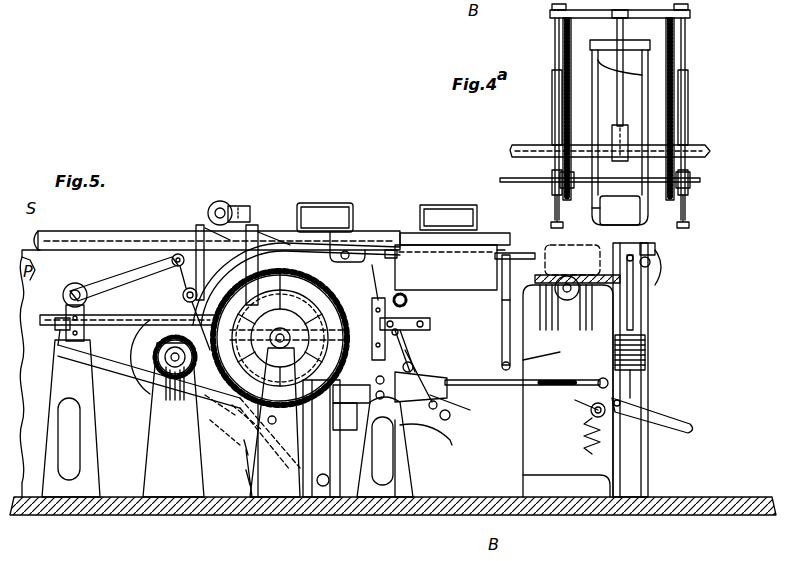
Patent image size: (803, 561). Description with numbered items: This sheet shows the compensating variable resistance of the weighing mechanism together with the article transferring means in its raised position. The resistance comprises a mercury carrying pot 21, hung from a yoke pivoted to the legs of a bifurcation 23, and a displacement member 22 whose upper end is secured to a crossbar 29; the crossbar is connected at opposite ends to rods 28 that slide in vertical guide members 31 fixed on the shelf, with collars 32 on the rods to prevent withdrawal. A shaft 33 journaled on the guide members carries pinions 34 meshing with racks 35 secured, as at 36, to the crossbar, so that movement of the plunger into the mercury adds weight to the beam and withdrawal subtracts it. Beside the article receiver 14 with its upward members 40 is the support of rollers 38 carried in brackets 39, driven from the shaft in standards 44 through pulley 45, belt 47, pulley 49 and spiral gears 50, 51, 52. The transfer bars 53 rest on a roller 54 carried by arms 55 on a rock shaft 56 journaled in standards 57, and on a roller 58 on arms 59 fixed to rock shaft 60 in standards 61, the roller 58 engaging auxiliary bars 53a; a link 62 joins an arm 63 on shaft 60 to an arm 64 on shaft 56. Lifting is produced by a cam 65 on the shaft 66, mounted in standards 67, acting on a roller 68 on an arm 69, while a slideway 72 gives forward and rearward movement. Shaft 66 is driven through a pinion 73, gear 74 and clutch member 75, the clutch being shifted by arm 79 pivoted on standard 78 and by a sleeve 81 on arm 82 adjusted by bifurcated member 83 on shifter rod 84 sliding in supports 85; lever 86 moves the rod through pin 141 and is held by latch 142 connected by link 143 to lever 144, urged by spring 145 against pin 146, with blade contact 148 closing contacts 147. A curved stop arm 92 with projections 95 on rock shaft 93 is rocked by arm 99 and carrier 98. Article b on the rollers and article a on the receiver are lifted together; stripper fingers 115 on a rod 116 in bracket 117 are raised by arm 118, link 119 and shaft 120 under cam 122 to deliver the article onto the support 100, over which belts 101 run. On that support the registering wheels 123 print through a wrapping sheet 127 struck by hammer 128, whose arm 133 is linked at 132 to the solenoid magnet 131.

In FIG. 4A, the rack securing point 36 is at (564, 9).
In FIG. 4A, the crossbar 29 is at (608, 24).
In FIG. 4A, the rods 28 is at (555, 37).
In FIG. 4A, the racks 35 is at (565, 90).
In FIG. 4A, the vertical guide members 31 is at (553, 117).
In FIG. 4A, the displacement member 22 is at (617, 108).
In FIG. 4A, the mercury carrying pot 21 is at (655, 210).
In FIG. 4A, the bifurcation 23 is at (660, 74).
In FIG. 4A, the shaft 33 is at (518, 179).
In FIG. 4A, the pinions 34 is at (578, 174).
In FIG. 4A, the collars 32 is at (551, 225).
In FIG. 5, the standards 57 is at (92, 467).
In FIG. 5, the standards 44 is at (173, 420).
In FIG. 5, the shaft 66 is at (272, 345).
In FIG. 5, the arm 69 is at (266, 448).
In FIG. 5, the cam following roller 68 is at (270, 431).
In FIG. 5, the arm 63 is at (312, 497).
In FIG. 5, the standard 78 is at (332, 497).
In FIG. 5, the standards 67 is at (275, 500).
In FIG. 5, the standards 61 is at (395, 500).
In FIG. 5, the rock shaft 60 is at (385, 447).
In FIG. 5, the clutch member 75 is at (280, 338).
In FIG. 5, the clutch shifter arm 79 is at (285, 333).
In FIG. 5, the carrier 98 is at (276, 332).
In FIG. 5, the cam 122 is at (299, 278).
In FIG. 5, the shaft 120 is at (293, 339).
In FIG. 5, the curved arm 92 is at (268, 252).
In FIG. 5, the transfer bars 53 is at (160, 232).
In FIG. 5, the article receiver 14 is at (490, 246).
In FIG. 5, the article b is at (325, 217).
In FIG. 5, the article a is at (448, 217).
In FIG. 5, the spaced projections 95 is at (347, 250).
In FIG. 5, the rollers 38 is at (351, 345).
In FIG. 5, the shifter lever arm 82 is at (363, 390).
In FIG. 5, the sleeve 81 is at (373, 394).
In FIG. 5, the pulley 49 is at (226, 202).
In FIG. 5, the spiral gears 50 is at (232, 207).
In FIG. 5, the spiral gears 52 is at (198, 228).
In FIG. 5, the belt 47 is at (205, 236).
In FIG. 5, the bracket 39 is at (250, 226).
In FIG. 5, the spiral gears 51 is at (266, 232).
In FIG. 5, the arms 55 is at (152, 280).
In FIG. 5, the roller 54 is at (172, 262).
In FIG. 5, the rock shaft 56 is at (63, 293).
In FIG. 5, the arm 99 is at (170, 316).
In FIG. 5, the rock shaft 93 is at (183, 295).
In FIG. 5, the arm 64 is at (55, 325).
In FIG. 5, the shifter bar supports 85 is at (58, 348).
In FIG. 5, the pulley 45 is at (128, 346).
In FIG. 5, the pinion 73 is at (150, 385).
In FIG. 5, the gear 74 is at (233, 412).
In FIG. 5, the vertical slideway 72 is at (221, 436).
In FIG. 5, the cam 65 is at (234, 453).
In FIG. 5, the link 62 is at (235, 480).
In FIG. 5, the parallel spaced members 40 is at (446, 267).
In FIG. 5, the stripper fingers 115 is at (497, 250).
In FIG. 5, the rod 116 is at (502, 310).
In FIG. 5, the bracket 117 is at (488, 320).
In FIG. 5, the arm 118 is at (506, 360).
In FIG. 5, the shifter rod 84 is at (386, 312).
In FIG. 5, the shifter pin 141 is at (440, 307).
In FIG. 5, the lever 86 is at (410, 344).
In FIG. 5, the blade contact 148 is at (421, 382).
In FIG. 5, the contacts 147 is at (415, 388).
In FIG. 5, the roller 58 is at (452, 416).
In FIG. 5, the arms 59 is at (440, 432).
In FIG. 5, the latch 142 is at (458, 386).
In FIG. 5, the auxiliary bars 53a is at (466, 409).
In FIG. 5, the link 143 is at (598, 382).
In FIG. 5, the second support 100 is at (568, 391).
In FIG. 5, the registering wheels 123 is at (567, 300).
In FIG. 5, the link connection 119 is at (553, 354).
In FIG. 5, the belts 101 is at (600, 272).
In FIG. 5, the link connection 132 is at (648, 298).
In FIG. 5, the solenoid magnet 131 is at (648, 352).
In FIG. 5, the wrapping sheet 127 is at (656, 247).
In FIG. 5, the arm 133 is at (651, 262).
In FIG. 5, the hammer 128 is at (660, 275).
In FIG. 5, the pin 146 is at (630, 405).
In FIG. 5, the lever 144 is at (579, 407).
In FIG. 5, the spring 145 is at (600, 440).
In FIG. 5, the bifurcated member 83 is at (402, 292).